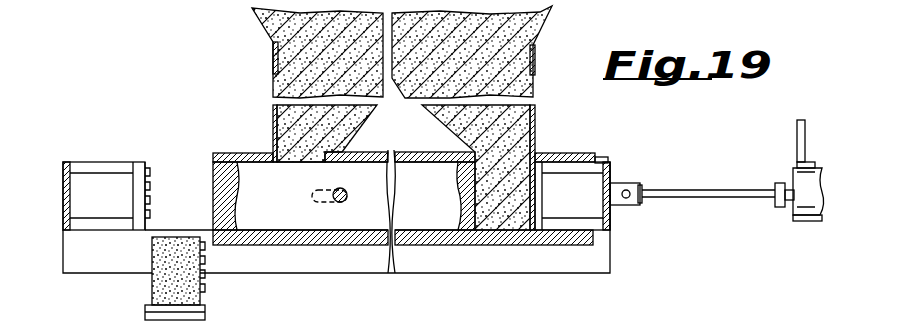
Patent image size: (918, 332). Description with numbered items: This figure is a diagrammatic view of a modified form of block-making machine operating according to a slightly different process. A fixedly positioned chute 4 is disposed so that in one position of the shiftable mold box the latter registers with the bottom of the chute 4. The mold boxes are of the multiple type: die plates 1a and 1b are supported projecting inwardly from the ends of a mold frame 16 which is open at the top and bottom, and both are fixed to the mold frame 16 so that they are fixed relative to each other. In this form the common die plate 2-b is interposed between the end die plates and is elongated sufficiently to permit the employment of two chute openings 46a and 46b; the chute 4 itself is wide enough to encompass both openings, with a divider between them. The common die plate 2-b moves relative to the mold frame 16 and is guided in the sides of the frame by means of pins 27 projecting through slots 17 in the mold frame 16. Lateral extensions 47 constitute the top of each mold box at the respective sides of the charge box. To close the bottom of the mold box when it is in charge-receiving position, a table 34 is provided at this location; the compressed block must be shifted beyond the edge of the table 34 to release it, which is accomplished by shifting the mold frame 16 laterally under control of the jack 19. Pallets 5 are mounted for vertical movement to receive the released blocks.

The mold frame 16 is at (68, 163).
The die plate 1a is at (140, 163).
The lateral extension 47 is at (227, 161).
The chute opening 46a is at (293, 147).
The chute opening 46b is at (533, 137).
The die plate 1b is at (548, 159).
The chute 4 is at (548, 22).
The common die plate 2-b is at (310, 190).
The pin 27 is at (345, 190).
The slot 17 is at (321, 204).
The table 34 is at (316, 247).
The pallet 5 is at (147, 312).
The jack 19 is at (808, 219).